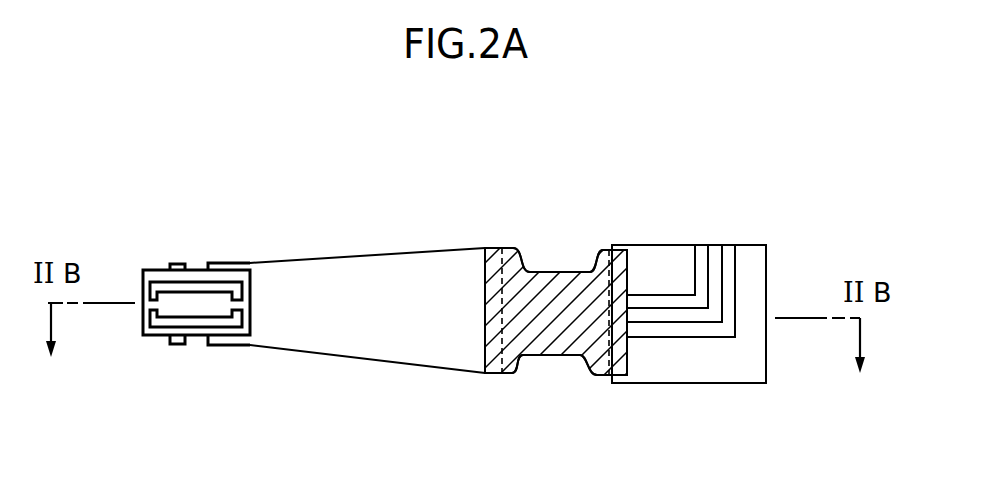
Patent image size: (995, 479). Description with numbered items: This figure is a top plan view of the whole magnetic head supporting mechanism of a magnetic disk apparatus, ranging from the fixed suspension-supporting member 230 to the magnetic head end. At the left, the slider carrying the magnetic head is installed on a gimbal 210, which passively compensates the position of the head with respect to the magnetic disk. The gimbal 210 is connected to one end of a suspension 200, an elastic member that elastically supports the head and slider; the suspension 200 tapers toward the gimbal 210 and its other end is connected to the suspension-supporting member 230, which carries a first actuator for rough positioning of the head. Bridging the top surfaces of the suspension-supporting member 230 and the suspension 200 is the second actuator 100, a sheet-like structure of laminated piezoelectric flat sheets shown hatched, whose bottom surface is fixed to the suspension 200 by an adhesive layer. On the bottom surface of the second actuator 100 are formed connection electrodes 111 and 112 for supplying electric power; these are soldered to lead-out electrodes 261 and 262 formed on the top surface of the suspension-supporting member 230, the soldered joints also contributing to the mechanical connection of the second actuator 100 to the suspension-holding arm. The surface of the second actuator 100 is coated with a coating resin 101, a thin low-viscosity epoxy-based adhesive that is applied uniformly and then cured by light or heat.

The second actuator 100 is at (565, 268).
The coating resin 101 is at (522, 265).
The connection electrode 111 is at (555, 353).
The connection electrode 112 is at (588, 367).
The suspension 200 is at (352, 273).
The gimbal 210 is at (212, 295).
The suspension-supporting member 230 is at (696, 311).
The lead-out electrode 261 is at (697, 303).
The lead-out electrode 262 is at (670, 332).